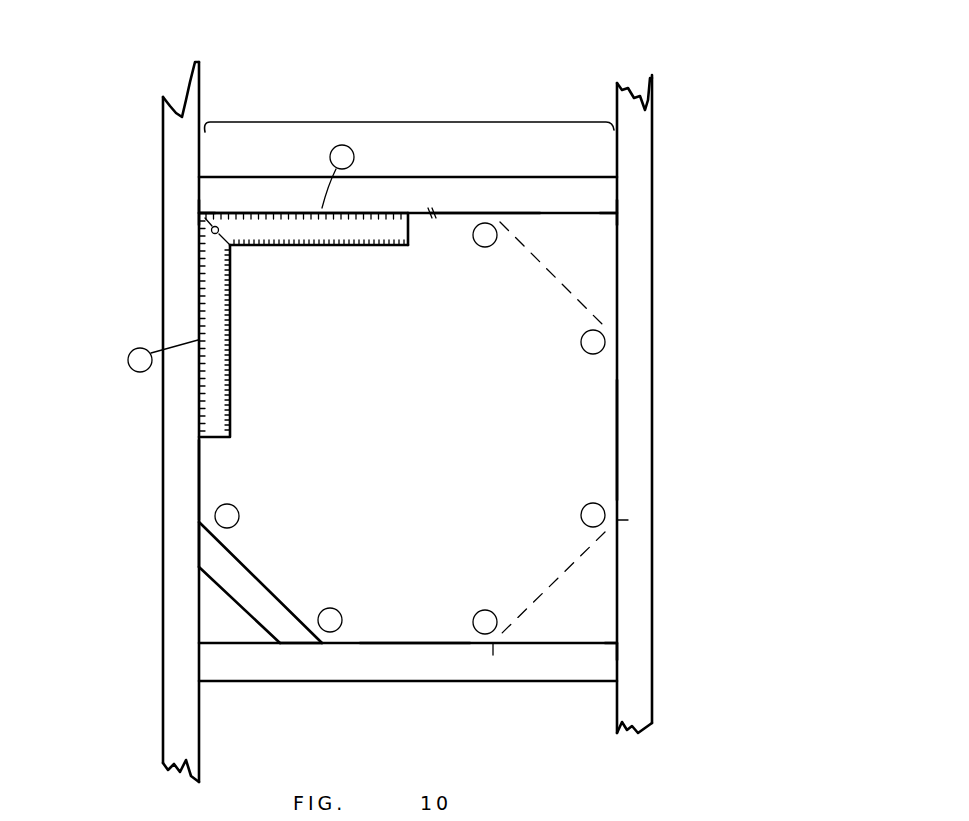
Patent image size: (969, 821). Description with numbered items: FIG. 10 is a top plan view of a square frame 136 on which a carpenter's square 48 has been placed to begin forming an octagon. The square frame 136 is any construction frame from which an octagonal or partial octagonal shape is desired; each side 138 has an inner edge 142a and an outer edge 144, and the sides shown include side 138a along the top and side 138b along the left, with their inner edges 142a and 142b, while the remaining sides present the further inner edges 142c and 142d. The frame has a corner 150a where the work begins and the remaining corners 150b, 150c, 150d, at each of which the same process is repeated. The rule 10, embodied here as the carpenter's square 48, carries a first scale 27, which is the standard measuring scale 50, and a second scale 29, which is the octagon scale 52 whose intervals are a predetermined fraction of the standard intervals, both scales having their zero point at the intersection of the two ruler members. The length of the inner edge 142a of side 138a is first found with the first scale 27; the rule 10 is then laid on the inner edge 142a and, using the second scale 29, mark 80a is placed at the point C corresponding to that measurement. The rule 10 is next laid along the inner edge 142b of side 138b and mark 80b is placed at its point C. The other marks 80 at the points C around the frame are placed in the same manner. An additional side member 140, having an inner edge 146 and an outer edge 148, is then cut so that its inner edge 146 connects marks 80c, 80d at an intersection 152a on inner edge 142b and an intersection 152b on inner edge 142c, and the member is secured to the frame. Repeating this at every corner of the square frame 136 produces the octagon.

The square frame 136 is at (627, 37).
The side 138 is at (655, 268).
The side 138a is at (390, 122).
The side 138b is at (175, 265).
The outer edge 144 is at (163, 432).
The corner 150a is at (200, 213).
The upper right corner joint 150b is at (617, 213).
The lower left corner joint 150c is at (200, 650).
The lower right corner joint 150d is at (617, 643).
The inner edge 142a is at (460, 215).
The inner edge 142b is at (200, 478).
The inner edge 142c is at (398, 643).
The inner edge of right member 142d is at (617, 438).
The clamp 80 is at (491, 213).
The mark 80a is at (322, 213).
The mark 80b is at (198, 340).
The mark 80c is at (200, 522).
The mark 80d is at (322, 645).
The additional side member 140 is at (258, 587).
The inner edge 146 is at (248, 565).
The outer edge 148 is at (233, 597).
The intersection 152a is at (200, 548).
The intersection 152b is at (295, 645).
The rule 10 is at (405, 228).
The first scale 27 is at (372, 238).
The second scale 29 is at (345, 215).
The carpenter's square 48 is at (233, 248).
The standard measuring scale 50 is at (290, 248).
The octagon scale 52 is at (272, 213).